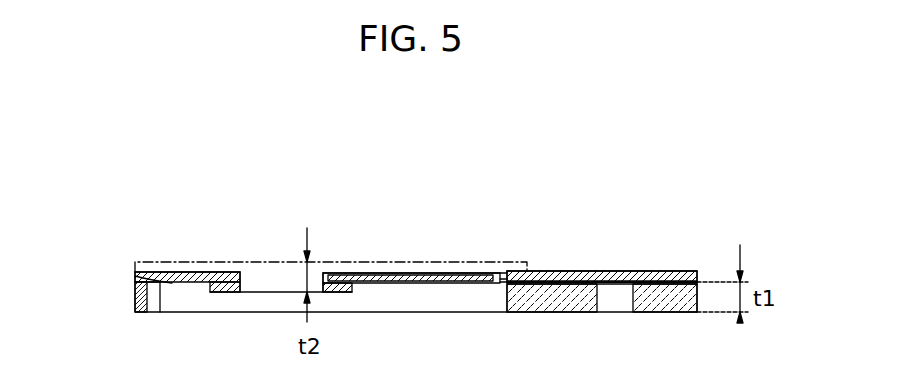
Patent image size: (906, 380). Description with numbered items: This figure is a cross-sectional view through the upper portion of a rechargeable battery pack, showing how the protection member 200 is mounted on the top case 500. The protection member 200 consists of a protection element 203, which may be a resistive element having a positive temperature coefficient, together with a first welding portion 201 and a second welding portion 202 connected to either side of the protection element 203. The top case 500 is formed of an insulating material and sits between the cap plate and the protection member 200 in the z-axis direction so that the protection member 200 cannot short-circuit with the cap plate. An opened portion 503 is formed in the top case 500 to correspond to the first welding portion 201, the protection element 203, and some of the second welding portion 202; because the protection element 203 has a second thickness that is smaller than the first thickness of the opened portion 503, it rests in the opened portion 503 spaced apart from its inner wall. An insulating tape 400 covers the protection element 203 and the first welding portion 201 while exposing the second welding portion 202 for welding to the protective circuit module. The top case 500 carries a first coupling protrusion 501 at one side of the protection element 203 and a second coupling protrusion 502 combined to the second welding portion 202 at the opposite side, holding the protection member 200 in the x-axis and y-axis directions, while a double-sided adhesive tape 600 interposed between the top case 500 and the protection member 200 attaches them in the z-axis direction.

The protection member 200 is at (135, 271).
The first welding portion 201 is at (468, 278).
The second welding portion 202 is at (543, 275).
The protection element 203 is at (273, 282).
The insulating tape 400 is at (215, 262).
The top case 500 is at (135, 292).
The first coupling protrusion 501 is at (150, 272).
The second coupling protrusion 502 is at (688, 276).
The opened portion 503 is at (422, 297).
The double-sided adhesive tape 600 is at (567, 284).